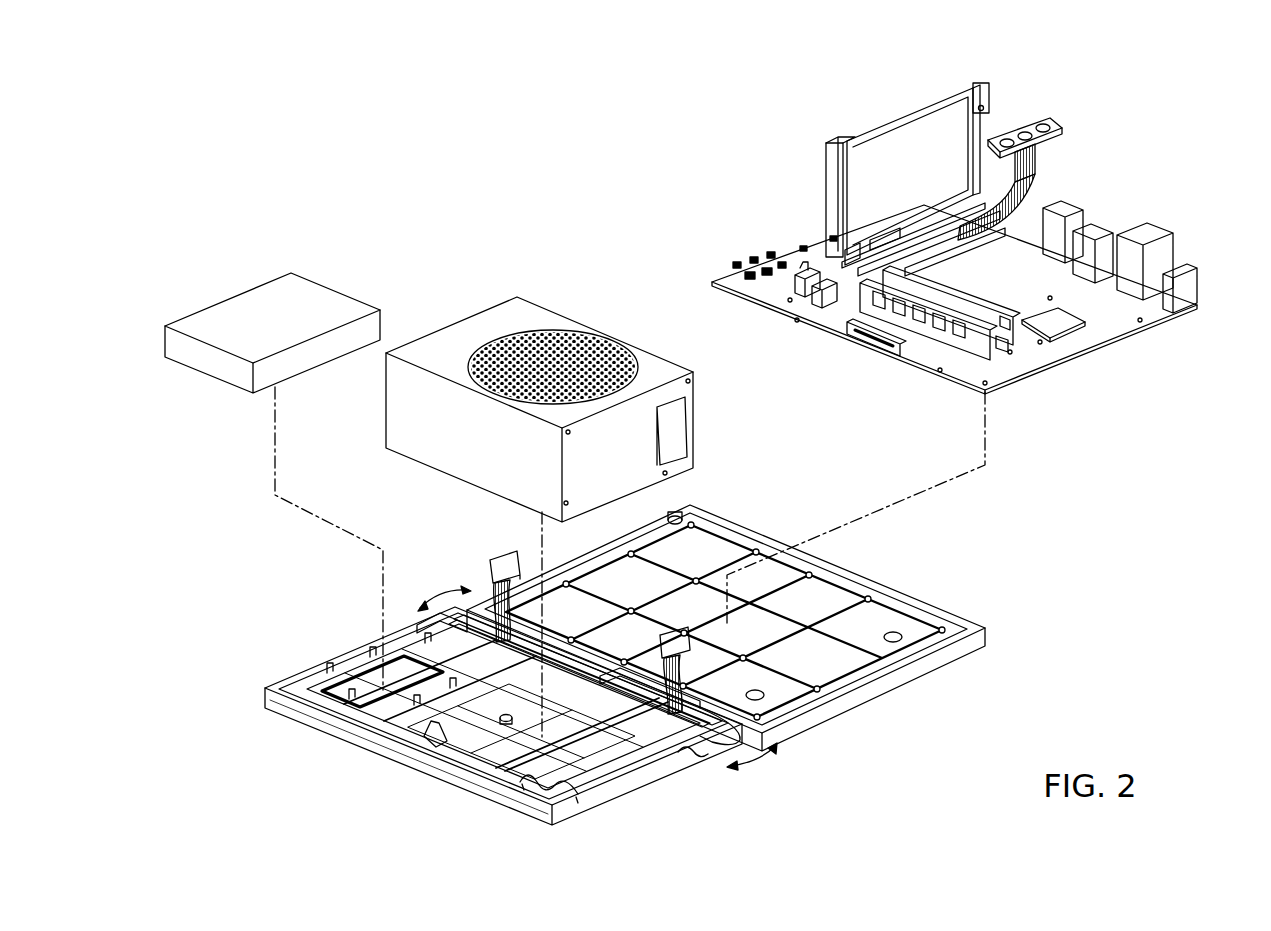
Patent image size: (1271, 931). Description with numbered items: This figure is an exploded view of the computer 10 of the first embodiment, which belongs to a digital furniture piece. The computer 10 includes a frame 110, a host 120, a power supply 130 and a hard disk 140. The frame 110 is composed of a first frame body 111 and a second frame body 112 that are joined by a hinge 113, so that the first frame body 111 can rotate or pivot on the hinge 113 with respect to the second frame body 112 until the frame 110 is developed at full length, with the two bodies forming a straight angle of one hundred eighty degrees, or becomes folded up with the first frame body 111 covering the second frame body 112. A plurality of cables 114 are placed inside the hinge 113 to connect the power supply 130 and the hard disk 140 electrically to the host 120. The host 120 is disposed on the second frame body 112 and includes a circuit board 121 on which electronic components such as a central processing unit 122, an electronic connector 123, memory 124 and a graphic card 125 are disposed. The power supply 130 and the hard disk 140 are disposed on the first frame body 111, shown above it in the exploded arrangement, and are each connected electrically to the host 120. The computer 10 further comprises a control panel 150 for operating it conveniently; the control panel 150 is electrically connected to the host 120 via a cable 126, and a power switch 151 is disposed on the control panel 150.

The computer 10 is at (129, 73).
The frame 110 is at (625, 675).
The first frame body 111 is at (577, 812).
The second frame body 112 is at (885, 678).
The hinge 113 is at (633, 695).
The cables 114 is at (497, 582).
The host 120 is at (967, 327).
The circuit board 121 is at (1138, 305).
The central processing unit 122 is at (1052, 324).
The electronic connector 123 is at (1150, 248).
The memory 124 is at (938, 340).
The graphic card 125 is at (840, 141).
The cable 126 is at (1036, 170).
The power supply 130 is at (458, 340).
The hard disk 140 is at (240, 316).
The control panel 150 is at (1062, 109).
The power switch 151 is at (1030, 128).